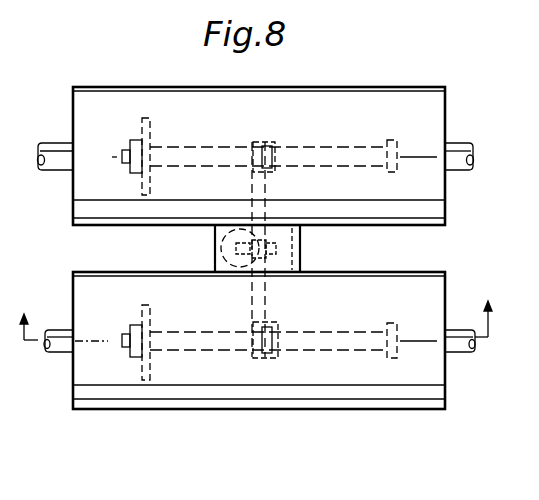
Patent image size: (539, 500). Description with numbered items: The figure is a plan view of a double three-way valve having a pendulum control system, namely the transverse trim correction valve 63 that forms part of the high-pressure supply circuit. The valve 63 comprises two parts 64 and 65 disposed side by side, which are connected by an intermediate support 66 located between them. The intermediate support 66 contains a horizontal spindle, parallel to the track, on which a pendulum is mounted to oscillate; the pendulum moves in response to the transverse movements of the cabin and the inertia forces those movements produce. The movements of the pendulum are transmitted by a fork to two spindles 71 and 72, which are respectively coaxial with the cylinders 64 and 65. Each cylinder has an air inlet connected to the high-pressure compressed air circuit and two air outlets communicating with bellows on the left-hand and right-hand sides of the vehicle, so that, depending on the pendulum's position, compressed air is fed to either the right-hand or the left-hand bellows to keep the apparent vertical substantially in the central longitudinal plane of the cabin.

The transverse trim correction valve 63 is at (340, 83).
The part 64 is at (447, 390).
The part 65 is at (447, 117).
The intermediate support 66 is at (301, 250).
The spindle 71 is at (180, 340).
The spindle 72 is at (197, 155).